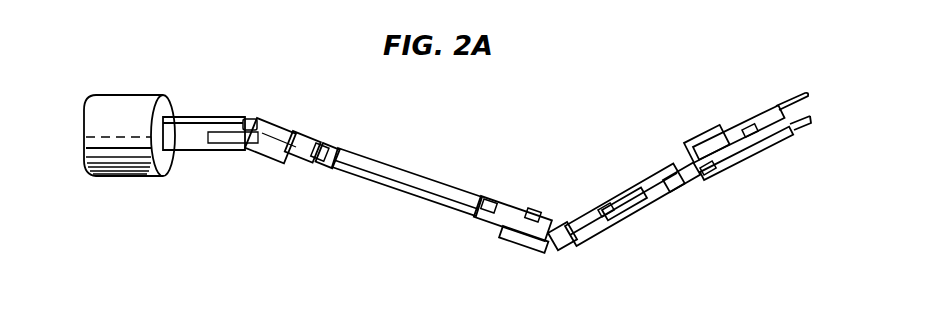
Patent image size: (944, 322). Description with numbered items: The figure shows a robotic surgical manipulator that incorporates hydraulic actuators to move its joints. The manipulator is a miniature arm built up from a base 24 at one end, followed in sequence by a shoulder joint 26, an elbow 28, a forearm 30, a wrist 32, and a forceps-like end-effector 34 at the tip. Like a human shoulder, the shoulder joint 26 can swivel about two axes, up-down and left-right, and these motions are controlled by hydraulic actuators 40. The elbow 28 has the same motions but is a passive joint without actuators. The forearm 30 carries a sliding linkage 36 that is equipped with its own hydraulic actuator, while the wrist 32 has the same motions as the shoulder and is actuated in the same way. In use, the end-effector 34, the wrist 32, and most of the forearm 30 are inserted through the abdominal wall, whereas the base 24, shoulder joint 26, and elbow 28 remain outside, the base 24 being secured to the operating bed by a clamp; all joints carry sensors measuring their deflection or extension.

The base 24 is at (128, 175).
The shoulder joint 26 is at (272, 98).
The elbow 28 is at (508, 255).
The forearm 30 is at (625, 237).
The wrist 32 is at (690, 134).
The forceps-like end-effector 34 is at (777, 149).
The sliding linkage 36 is at (630, 212).
The hydraulic actuators 40 is at (216, 118).